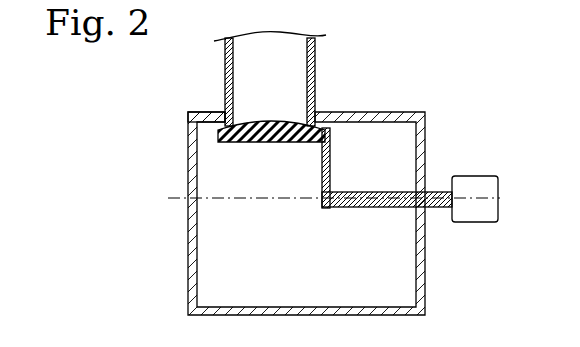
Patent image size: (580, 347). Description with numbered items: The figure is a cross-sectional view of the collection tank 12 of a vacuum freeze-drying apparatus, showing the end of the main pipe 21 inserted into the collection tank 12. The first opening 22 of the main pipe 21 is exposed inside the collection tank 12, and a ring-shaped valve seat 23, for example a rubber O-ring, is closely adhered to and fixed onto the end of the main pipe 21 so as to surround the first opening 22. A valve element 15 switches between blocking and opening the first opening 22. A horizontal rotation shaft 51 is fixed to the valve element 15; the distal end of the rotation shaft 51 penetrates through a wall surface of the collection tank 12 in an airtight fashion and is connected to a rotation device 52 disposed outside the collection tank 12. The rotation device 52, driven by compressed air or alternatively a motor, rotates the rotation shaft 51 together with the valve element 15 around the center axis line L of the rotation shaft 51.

The collection tank 12 is at (189, 155).
The valve element 15 is at (265, 118).
The main pipe 21 is at (225, 77).
The first opening 22 is at (296, 116).
The valve seat 23 is at (188, 117).
The rotation shaft 51 is at (360, 208).
The rotation device 52 is at (475, 176).
The center axis line L is at (215, 201).